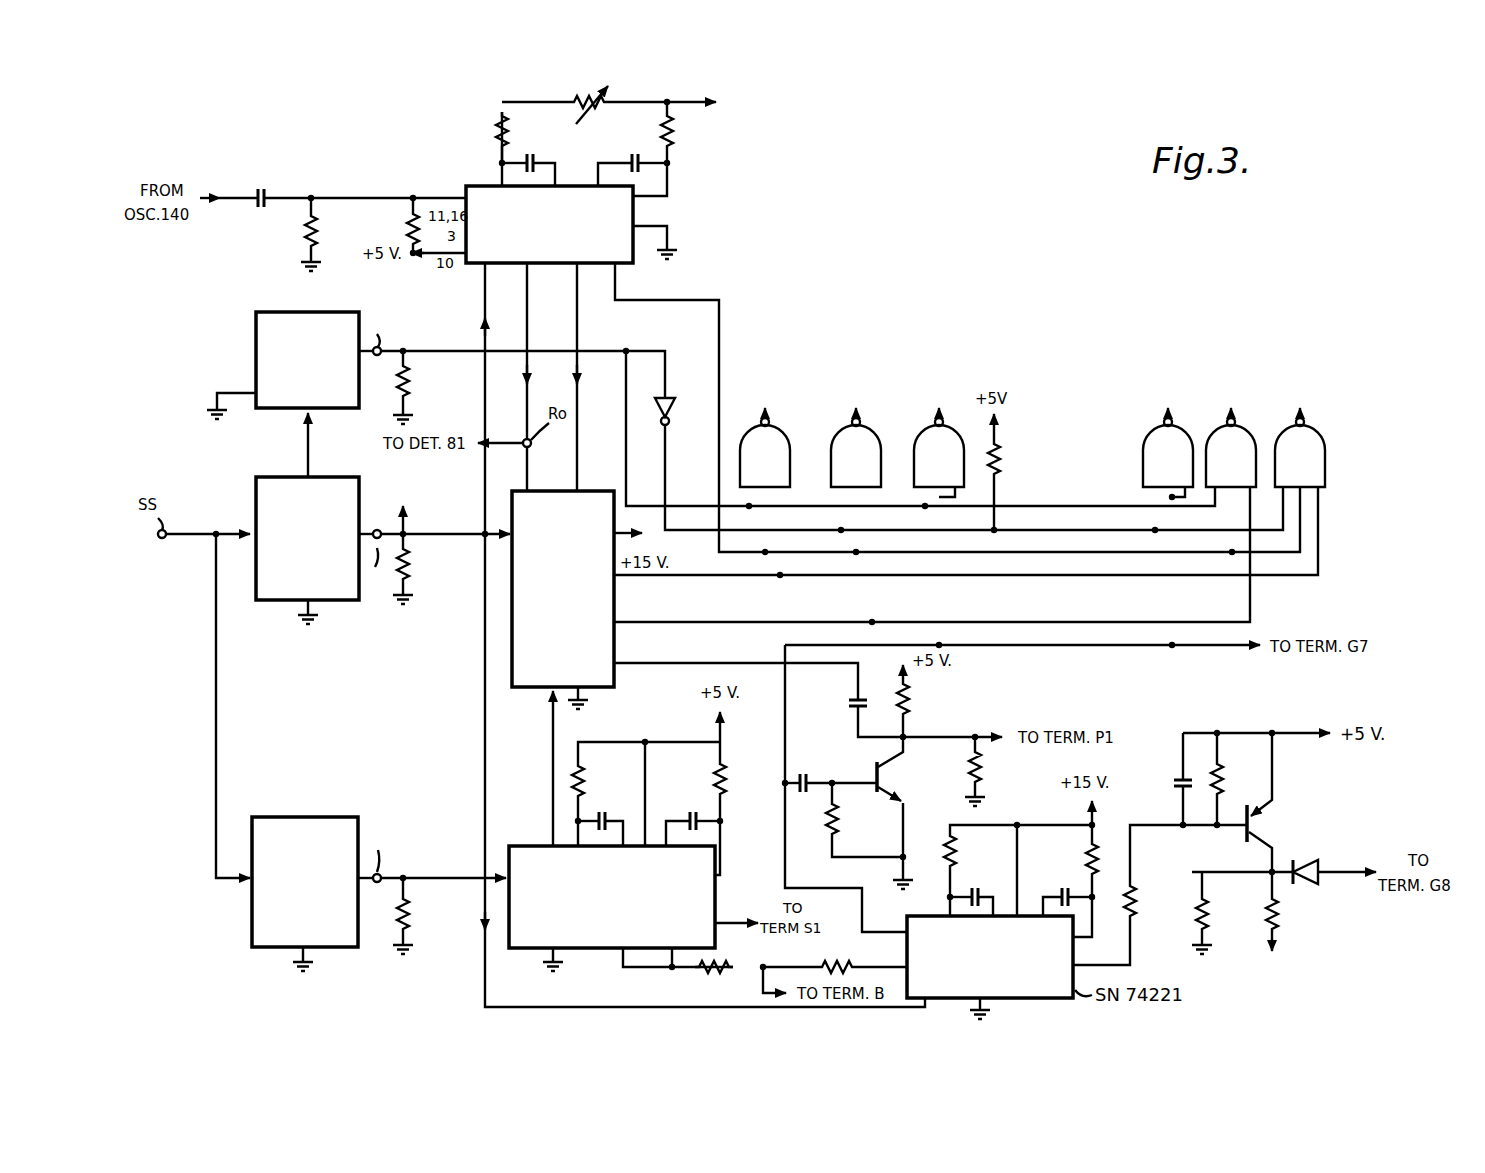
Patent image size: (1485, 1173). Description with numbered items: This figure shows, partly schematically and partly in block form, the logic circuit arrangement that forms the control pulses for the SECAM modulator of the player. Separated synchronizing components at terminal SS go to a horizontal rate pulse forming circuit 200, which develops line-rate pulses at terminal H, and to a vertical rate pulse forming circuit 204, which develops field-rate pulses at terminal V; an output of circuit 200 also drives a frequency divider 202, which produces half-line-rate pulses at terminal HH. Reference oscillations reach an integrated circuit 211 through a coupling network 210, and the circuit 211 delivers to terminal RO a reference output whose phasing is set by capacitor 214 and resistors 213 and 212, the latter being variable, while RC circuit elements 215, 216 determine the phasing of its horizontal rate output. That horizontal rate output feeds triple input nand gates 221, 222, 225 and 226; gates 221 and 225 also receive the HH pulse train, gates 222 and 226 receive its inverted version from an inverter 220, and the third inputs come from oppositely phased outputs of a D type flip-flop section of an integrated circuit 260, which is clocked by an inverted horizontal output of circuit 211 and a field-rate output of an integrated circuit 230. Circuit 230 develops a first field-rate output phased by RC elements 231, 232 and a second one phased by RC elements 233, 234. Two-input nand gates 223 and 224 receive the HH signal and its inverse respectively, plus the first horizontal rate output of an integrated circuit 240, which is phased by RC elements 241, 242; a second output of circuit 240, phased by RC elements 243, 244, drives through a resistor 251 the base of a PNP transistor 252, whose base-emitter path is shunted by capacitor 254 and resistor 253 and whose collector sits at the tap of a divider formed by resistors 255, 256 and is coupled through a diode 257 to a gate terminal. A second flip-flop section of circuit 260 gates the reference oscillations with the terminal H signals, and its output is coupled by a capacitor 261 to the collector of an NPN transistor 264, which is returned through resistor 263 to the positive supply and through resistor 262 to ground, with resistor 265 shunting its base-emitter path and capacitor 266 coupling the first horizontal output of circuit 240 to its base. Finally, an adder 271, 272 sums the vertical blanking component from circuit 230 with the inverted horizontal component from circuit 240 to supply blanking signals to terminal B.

The horizontal rate pulse forming circuit 200 is at (287, 477).
The frequency divider 202 is at (305, 312).
The vertical rate pulse forming circuit 204 is at (310, 817).
The coupling network 210 is at (332, 183).
The integrated circuit 211 is at (640, 211).
The variable resistor 212 is at (591, 110).
The resistor 213 is at (500, 146).
The capacitor 214 is at (530, 152).
The RC circuit element 215 is at (672, 140).
The RC circuit element 216 is at (628, 159).
The inverter 220 is at (668, 398).
The nand gate 221 is at (789, 432).
The nand gate 222 is at (879, 432).
The nand gate 223 is at (957, 430).
The nand gate 224 is at (1149, 432).
The nand gate 225 is at (1252, 432).
The nand gate 226 is at (1322, 432).
The integrated circuit 230 is at (523, 845).
The RC element 231 is at (582, 788).
The RC element 232 is at (604, 815).
The RC element 233 is at (723, 786).
The RC element 234 is at (693, 815).
The integrated circuit 240 is at (907, 925).
The RC element 241 is at (1085, 856).
The RC element 242 is at (1060, 893).
The RC element 243 is at (953, 858).
The RC element 244 is at (978, 890).
The resistor 251 is at (1136, 906).
The PNP transistor 252 is at (1245, 826).
The resistor 253 is at (1222, 780).
The capacitor 254 is at (1178, 782).
The resistor 255 is at (1206, 915).
The resistor 256 is at (1280, 905).
The diode 257 is at (1312, 862).
The integrated circuit 260 is at (615, 641).
The capacitor 261 is at (855, 700).
The resistor 262 is at (973, 776).
The resistor 263 is at (907, 697).
The NPN transistor 264 is at (876, 773).
The resistor 265 is at (838, 823).
The capacitor 266 is at (805, 772).
The adder 271 is at (702, 972).
The adder 272 is at (846, 965).